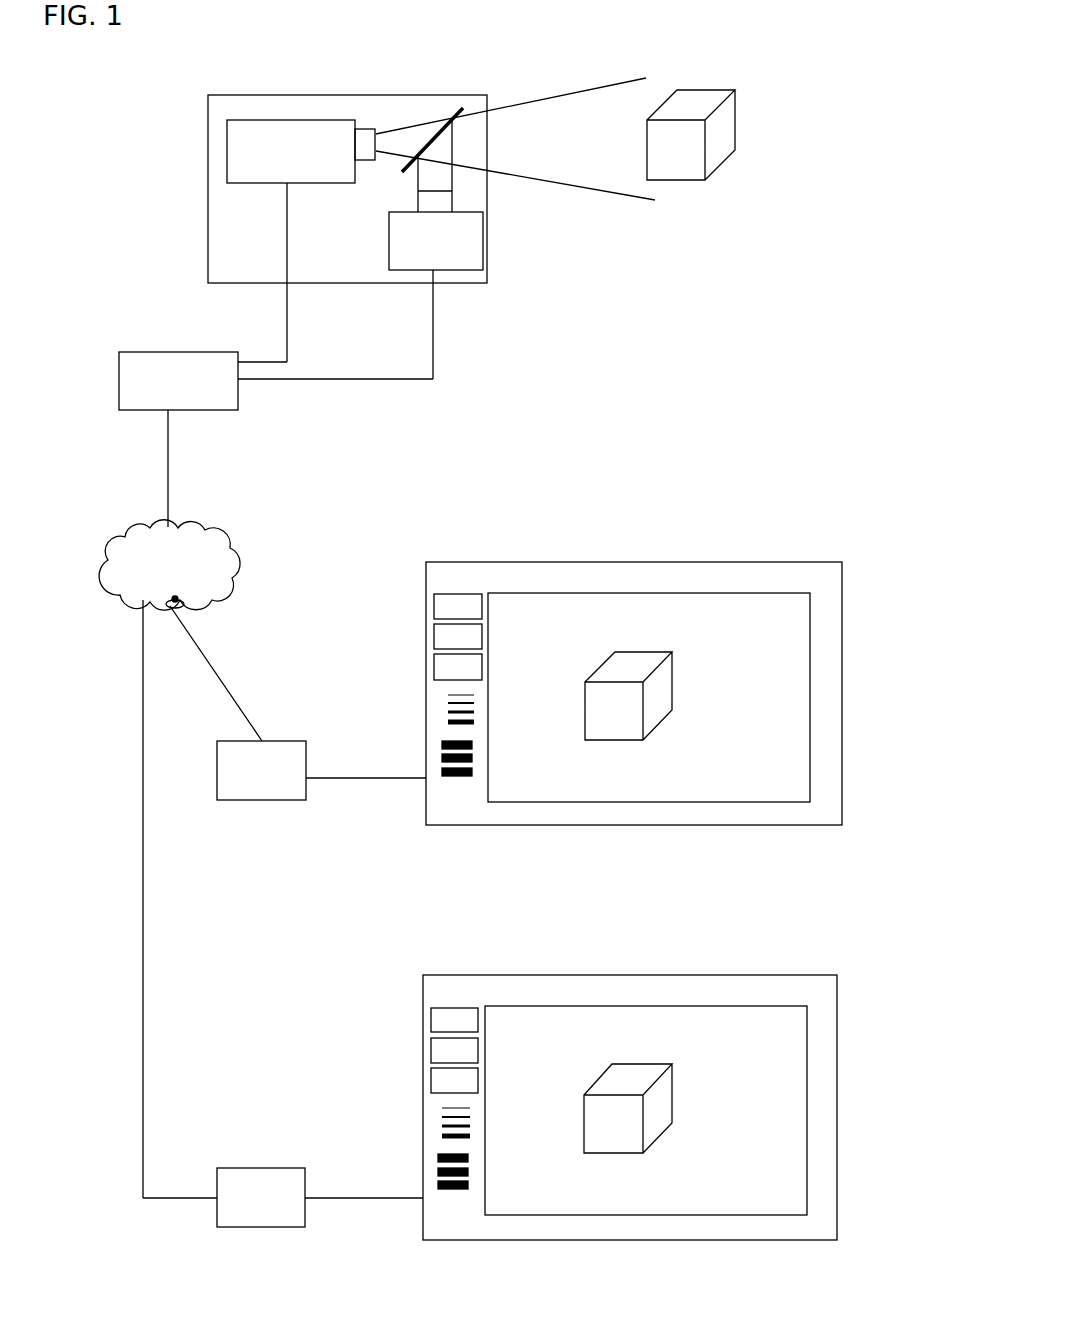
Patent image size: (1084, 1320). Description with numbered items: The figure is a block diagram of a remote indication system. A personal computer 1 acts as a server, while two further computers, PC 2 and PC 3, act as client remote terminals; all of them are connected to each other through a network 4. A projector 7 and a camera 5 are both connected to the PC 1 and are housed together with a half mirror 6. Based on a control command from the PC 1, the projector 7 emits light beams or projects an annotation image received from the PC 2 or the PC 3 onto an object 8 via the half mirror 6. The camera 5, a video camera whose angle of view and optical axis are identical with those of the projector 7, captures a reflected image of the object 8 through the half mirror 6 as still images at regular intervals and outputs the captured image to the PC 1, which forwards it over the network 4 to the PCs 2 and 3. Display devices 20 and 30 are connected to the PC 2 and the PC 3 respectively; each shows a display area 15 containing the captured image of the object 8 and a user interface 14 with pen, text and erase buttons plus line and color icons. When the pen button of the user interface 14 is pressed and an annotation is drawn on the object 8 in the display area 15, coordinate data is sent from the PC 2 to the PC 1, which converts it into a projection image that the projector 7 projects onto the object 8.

The personal computer (PC) 1 is at (119, 375).
The PC 2 is at (295, 740).
The PC 3 is at (293, 1167).
The network 4 is at (210, 570).
The camera 5 is at (483, 227).
The half mirror 6 is at (453, 115).
The projector 7 is at (275, 118).
The object 8 is at (710, 90).
The user interface (UI) 14 is at (417, 595).
The display area 15 is at (613, 593).
The display device 20 is at (722, 562).
The display device 30 is at (717, 975).